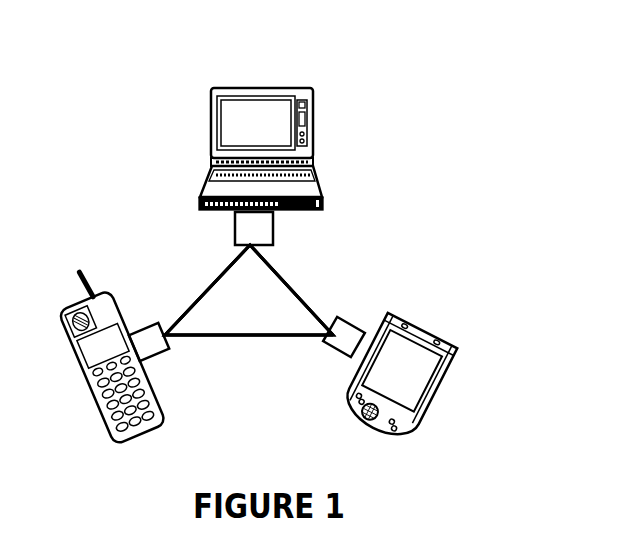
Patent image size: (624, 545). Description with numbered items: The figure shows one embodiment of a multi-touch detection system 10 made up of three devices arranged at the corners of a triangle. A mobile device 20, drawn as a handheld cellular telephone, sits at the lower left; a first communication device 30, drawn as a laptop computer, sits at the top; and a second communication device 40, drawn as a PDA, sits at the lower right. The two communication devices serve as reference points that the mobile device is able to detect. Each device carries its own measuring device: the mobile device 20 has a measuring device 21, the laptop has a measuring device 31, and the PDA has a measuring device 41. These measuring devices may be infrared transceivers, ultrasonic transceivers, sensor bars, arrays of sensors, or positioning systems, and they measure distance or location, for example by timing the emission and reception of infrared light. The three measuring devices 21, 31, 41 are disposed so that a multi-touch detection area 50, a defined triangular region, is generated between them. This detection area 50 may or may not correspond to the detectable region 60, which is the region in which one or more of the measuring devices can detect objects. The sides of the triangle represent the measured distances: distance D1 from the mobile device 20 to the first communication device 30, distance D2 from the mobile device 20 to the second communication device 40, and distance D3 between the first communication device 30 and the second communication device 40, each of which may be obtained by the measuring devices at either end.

The multi-touch detection system 10 is at (137, 87).
The mobile device 20 is at (120, 378).
The measuring device 21 is at (149, 342).
The first communication device 30 is at (263, 145).
The measuring device 31 is at (254, 228).
The second communication device 40 is at (404, 401).
The measuring device 41 is at (344, 337).
The multi-touch detection area 50 is at (253, 283).
The detectable region 60 is at (222, 268).
The distance D1 is at (208, 285).
The distance D2 is at (255, 338).
The distance D3 is at (317, 302).